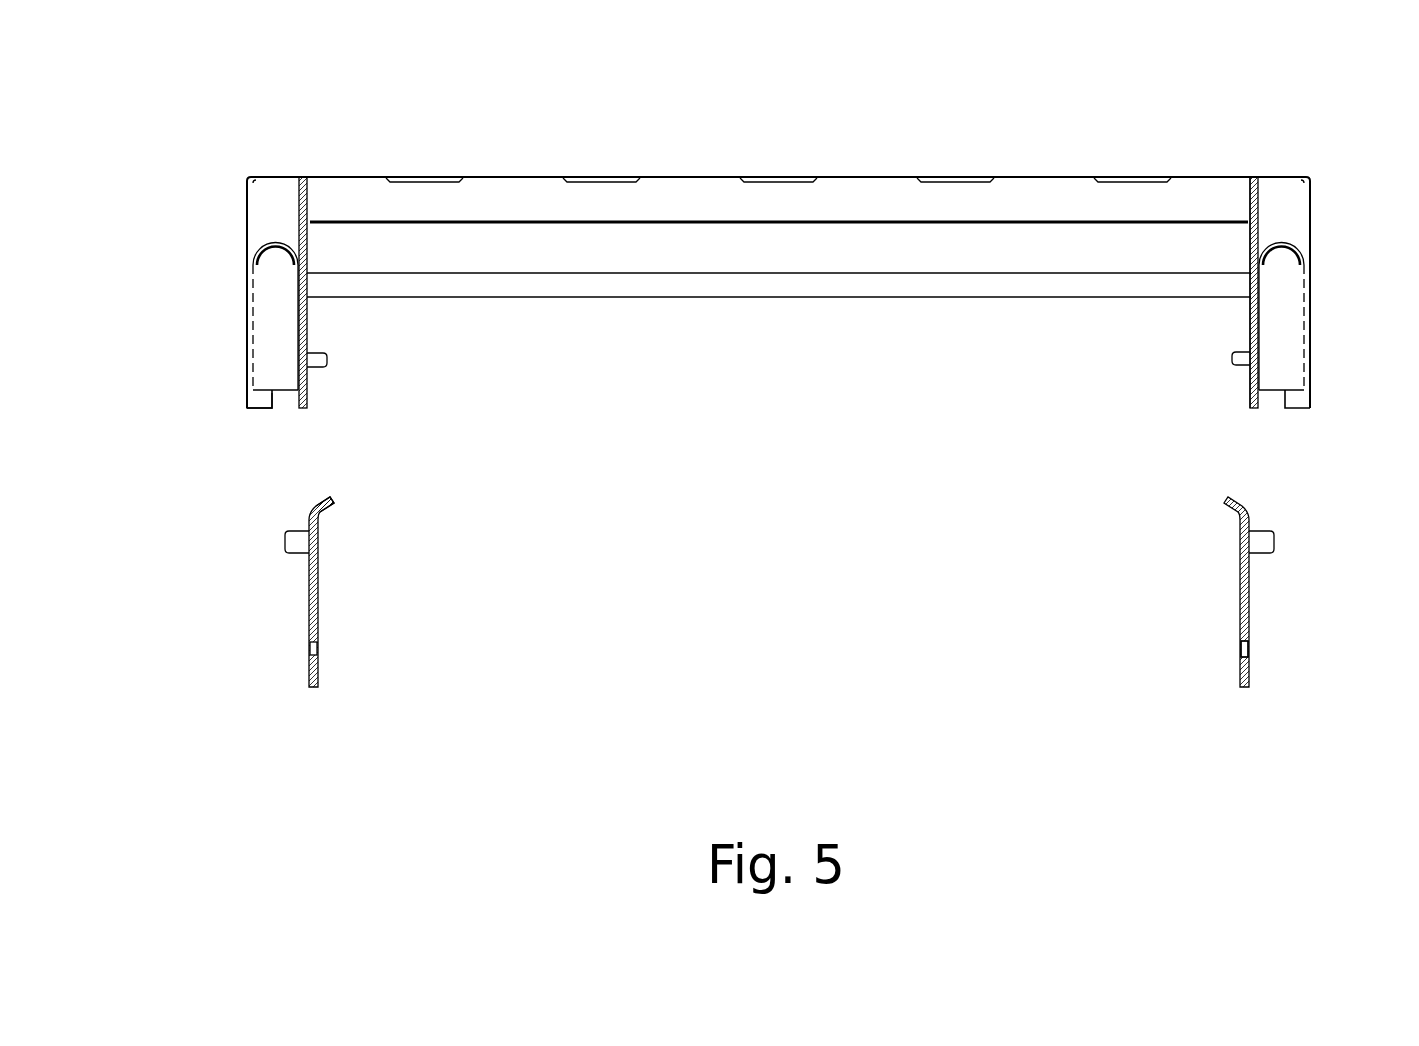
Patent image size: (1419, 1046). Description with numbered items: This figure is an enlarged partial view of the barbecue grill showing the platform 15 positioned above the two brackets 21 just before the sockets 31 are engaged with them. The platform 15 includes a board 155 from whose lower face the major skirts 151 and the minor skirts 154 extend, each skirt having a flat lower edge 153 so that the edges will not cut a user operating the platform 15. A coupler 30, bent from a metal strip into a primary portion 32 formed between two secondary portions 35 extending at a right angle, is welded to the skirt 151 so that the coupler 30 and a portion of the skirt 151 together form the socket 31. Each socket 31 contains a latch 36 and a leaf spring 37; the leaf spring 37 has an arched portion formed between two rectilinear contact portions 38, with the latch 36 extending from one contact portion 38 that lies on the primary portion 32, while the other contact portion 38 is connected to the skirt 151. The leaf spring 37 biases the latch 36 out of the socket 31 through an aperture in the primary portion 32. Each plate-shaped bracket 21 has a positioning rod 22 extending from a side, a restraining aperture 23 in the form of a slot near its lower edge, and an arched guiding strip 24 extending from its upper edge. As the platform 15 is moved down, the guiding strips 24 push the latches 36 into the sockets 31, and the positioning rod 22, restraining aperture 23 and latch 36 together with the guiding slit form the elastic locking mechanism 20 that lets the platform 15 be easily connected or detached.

The platform 15 is at (509, 152).
The major skirt 151 is at (247, 203).
The flat lower edge 153 is at (260, 408).
The minor skirt 154 is at (757, 253).
The board 155 is at (694, 177).
The elastic locking mechanism 20 is at (343, 535).
The bracket 21 is at (1241, 600).
The positioning rod 22 is at (298, 540).
The restraining aperture 23 is at (1245, 650).
The guiding strip 24 is at (333, 502).
The coupler 30 is at (1238, 193).
The socket 31 is at (1282, 192).
The secondary portion 35 is at (1290, 226).
The primary portion 32 is at (307, 200).
The latch 36 is at (1237, 360).
The leaf spring 37 is at (1285, 240).
The contact portion 38 is at (1307, 295).